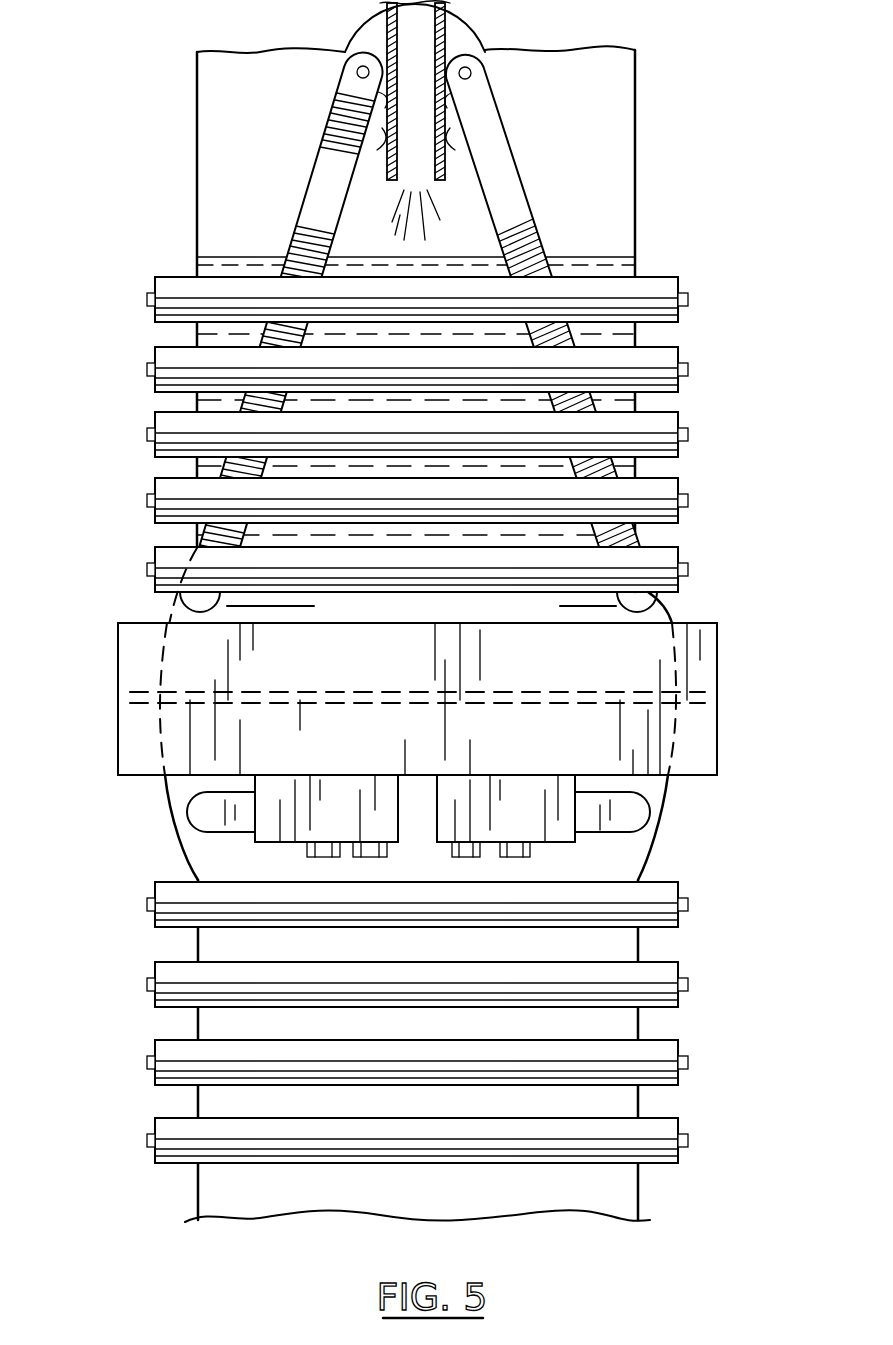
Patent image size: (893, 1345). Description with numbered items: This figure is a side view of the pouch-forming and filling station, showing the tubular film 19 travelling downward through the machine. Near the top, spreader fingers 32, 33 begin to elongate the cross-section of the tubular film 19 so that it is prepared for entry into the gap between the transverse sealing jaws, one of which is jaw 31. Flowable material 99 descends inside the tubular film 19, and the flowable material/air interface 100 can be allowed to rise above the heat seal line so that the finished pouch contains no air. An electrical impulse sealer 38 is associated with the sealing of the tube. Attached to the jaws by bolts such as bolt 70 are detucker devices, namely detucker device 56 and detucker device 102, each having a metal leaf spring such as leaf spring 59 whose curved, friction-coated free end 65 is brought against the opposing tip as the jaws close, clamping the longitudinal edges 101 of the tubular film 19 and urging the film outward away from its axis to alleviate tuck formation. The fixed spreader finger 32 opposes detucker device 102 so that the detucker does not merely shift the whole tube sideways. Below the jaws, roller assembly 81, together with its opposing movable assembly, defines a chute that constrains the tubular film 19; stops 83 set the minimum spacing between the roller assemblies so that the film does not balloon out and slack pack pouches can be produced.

The tubular film 19 is at (674, 608).
The jaw 31 is at (706, 730).
The spreader finger 32 is at (318, 185).
The spreader finger 33 is at (515, 195).
The electrical impulse sealer 38 is at (133, 692).
The detucker device 56 is at (296, 848).
The metal leaf spring 59 is at (238, 815).
The free end of leaf spring 65 is at (192, 825).
The bolt 70 is at (323, 858).
The roller assembly 81 is at (692, 962).
The stops 83 is at (692, 416).
The flowable material 99 is at (470, 606).
The flowable material/air interface 100 is at (597, 266).
The longitudinal edges of tubular film 101 is at (200, 860).
The detucker device 102 is at (563, 843).